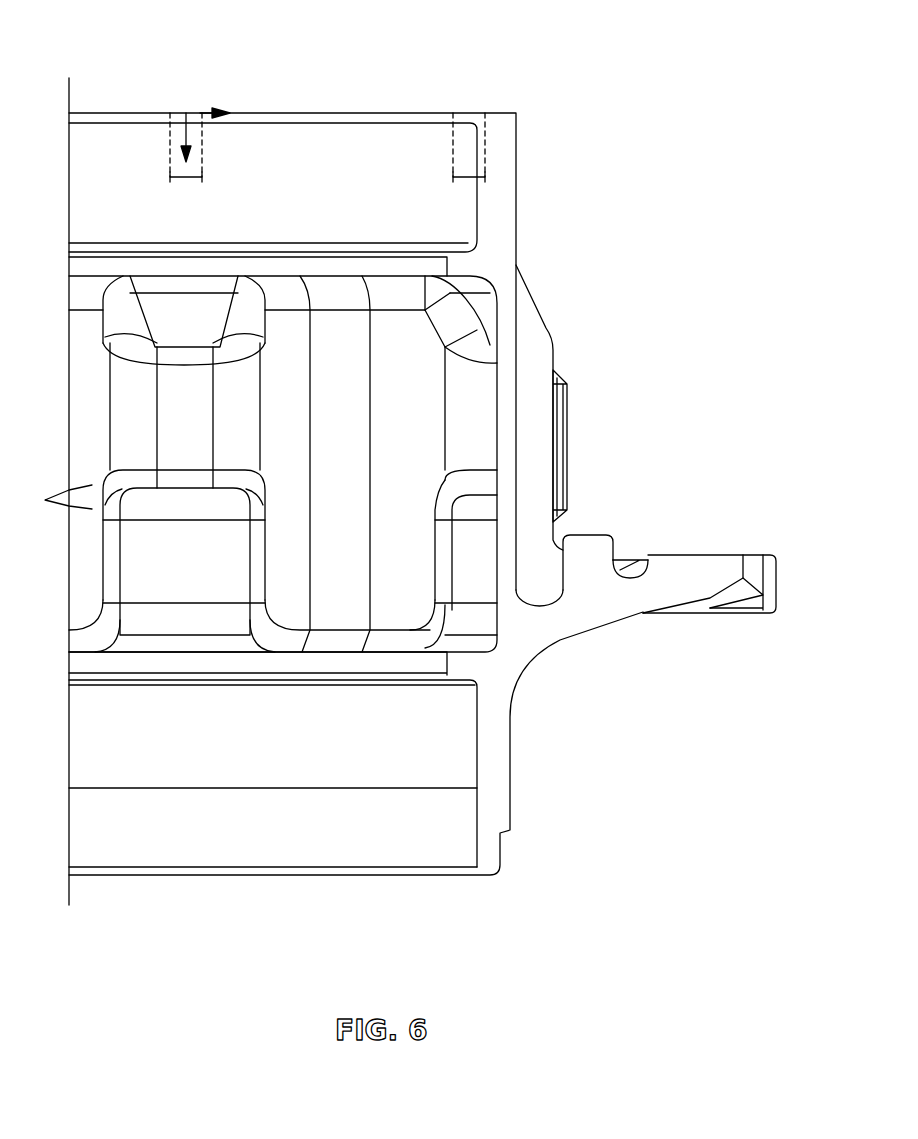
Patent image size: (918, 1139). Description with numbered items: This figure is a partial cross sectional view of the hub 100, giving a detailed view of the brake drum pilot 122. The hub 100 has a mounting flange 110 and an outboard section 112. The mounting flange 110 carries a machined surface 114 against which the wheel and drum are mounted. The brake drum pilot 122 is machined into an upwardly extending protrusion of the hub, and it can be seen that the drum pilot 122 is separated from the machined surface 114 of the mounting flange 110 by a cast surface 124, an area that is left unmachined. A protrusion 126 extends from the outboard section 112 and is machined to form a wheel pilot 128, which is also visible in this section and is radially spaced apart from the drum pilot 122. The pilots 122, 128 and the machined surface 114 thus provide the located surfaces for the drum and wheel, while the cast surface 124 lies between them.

The hub 100 is at (479, 466).
The mounting flange 110 is at (726, 538).
The outboard section 112 is at (356, 491).
The machined surface 114 is at (788, 575).
The brake drum pilot 122 is at (618, 543).
The cast surface 124 is at (641, 562).
The protrusion 126 is at (597, 435).
The wheel pilot 128 is at (569, 460).